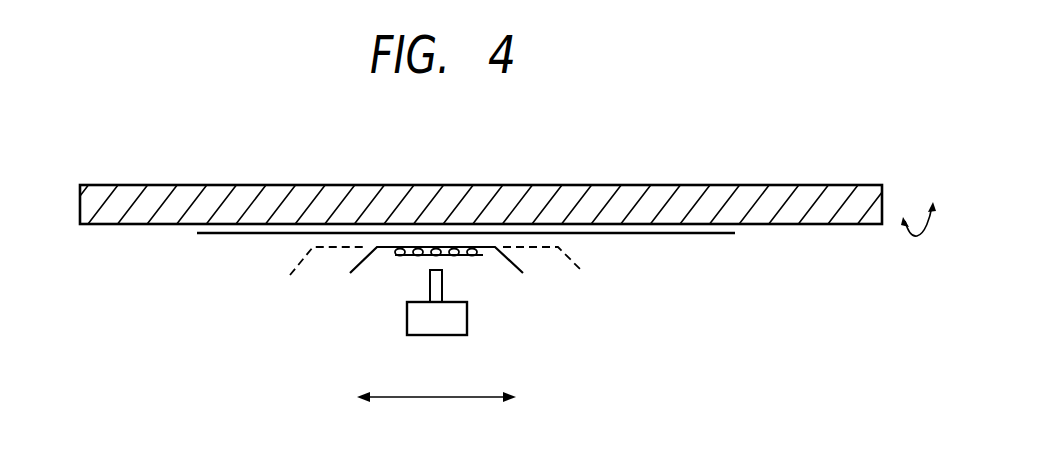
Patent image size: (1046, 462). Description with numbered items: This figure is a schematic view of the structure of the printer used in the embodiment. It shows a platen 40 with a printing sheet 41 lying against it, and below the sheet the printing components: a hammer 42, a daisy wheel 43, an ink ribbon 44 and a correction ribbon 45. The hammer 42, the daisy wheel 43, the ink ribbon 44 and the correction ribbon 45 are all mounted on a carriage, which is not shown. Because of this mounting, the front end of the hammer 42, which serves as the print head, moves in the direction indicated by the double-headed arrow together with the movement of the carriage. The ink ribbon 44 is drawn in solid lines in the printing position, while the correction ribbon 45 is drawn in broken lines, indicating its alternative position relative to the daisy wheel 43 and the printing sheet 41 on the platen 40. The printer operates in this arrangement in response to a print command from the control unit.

The platen 40 is at (750, 196).
The printing sheet 41 is at (708, 237).
The hammer 42 is at (442, 320).
The daisy wheel 43 is at (398, 258).
The ink ribbon 44 is at (518, 274).
The correction ribbon 45 is at (585, 273).